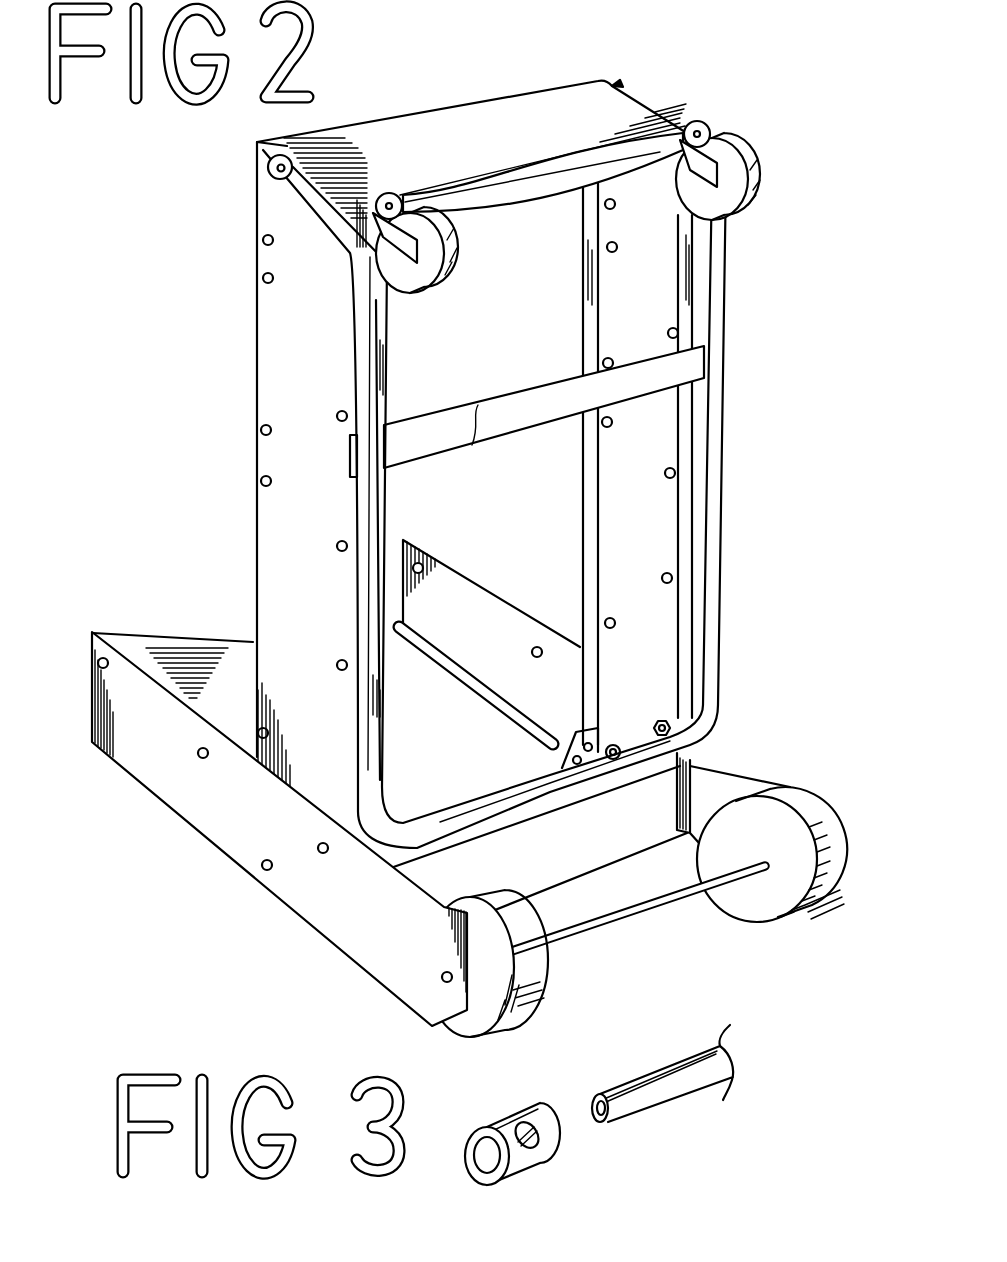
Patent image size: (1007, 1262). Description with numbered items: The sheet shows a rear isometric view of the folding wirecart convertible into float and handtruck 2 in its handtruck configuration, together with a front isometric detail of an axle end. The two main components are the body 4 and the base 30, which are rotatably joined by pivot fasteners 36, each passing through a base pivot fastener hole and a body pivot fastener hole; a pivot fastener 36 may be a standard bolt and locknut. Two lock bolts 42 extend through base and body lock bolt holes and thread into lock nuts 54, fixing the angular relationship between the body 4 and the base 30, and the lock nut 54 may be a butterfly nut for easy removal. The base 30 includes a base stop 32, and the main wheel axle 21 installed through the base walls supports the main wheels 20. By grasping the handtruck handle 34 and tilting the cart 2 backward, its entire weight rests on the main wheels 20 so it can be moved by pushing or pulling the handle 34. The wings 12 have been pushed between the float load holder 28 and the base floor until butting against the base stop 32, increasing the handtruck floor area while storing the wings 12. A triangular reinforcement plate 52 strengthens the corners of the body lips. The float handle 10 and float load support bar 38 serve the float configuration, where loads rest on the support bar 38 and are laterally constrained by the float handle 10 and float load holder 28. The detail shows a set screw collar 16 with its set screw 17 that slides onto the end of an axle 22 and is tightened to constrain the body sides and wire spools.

In FIG. 2, the folding wirecart convertible into float and handtruck 2 is at (770, 342).
In FIG. 2, the body 4 is at (257, 371).
In FIG. 2, the float handle 10 is at (532, 482).
In FIG. 2, the wings 12 is at (208, 645).
In FIG. 3, the set screw collar 16 is at (539, 1127).
In FIG. 3, the set screw 17 is at (545, 1138).
In FIG. 2, the main wheels 20 is at (637, 912).
In FIG. 2, the main wheel axle 21 is at (640, 921).
In FIG. 3, the axle 22 is at (676, 1093).
In FIG. 2, the float load holder 28 is at (456, 676).
In FIG. 2, the base 30 is at (91, 686).
In FIG. 2, the base stop 32 is at (680, 795).
In FIG. 2, the handtruck handle 34 is at (452, 197).
In FIG. 2, the pivot fastener 36 is at (262, 880).
In FIG. 2, the float load support bar 38 is at (700, 372).
In FIG. 2, the lock bolt 42 is at (323, 856).
In FIG. 2, the reinforcement plate 52 is at (613, 745).
In FIG. 2, the lock nut 54 is at (672, 725).